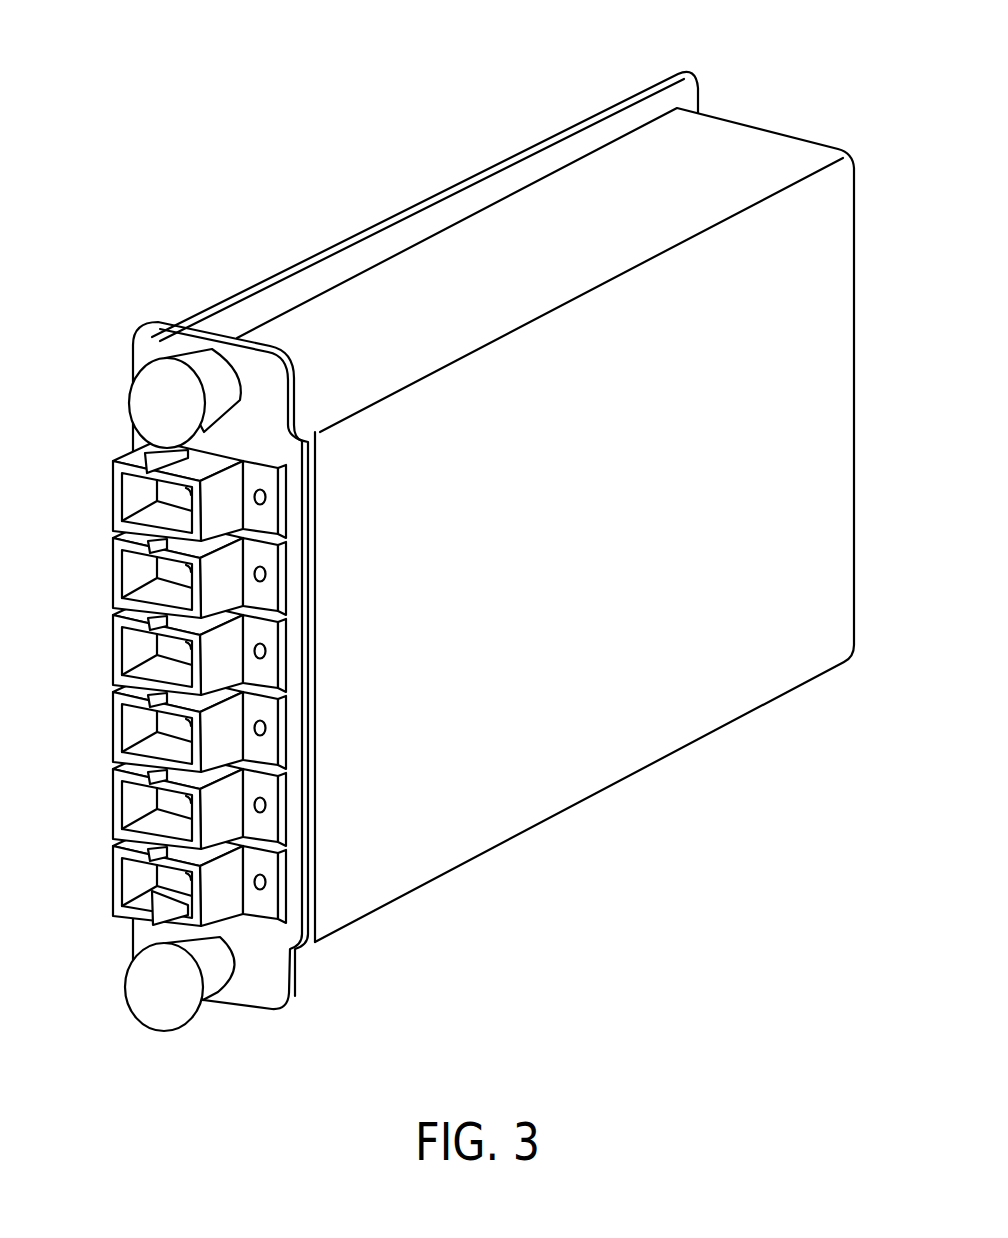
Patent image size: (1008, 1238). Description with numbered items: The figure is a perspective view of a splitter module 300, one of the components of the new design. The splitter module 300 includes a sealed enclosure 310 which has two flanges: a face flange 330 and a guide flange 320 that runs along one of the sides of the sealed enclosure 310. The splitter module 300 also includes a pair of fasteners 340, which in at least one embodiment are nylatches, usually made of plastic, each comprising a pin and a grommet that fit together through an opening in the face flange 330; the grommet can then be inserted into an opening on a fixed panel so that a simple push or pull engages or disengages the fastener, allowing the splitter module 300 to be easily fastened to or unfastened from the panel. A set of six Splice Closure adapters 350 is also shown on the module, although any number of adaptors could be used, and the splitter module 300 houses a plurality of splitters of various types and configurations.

The splitter module 300 is at (214, 80).
The sealed enclosure 310 is at (826, 410).
The guide flange 320 is at (398, 212).
The face flange 330 is at (278, 993).
The fasteners 340 is at (140, 380).
The fiber optic connectors 350 is at (75, 448).